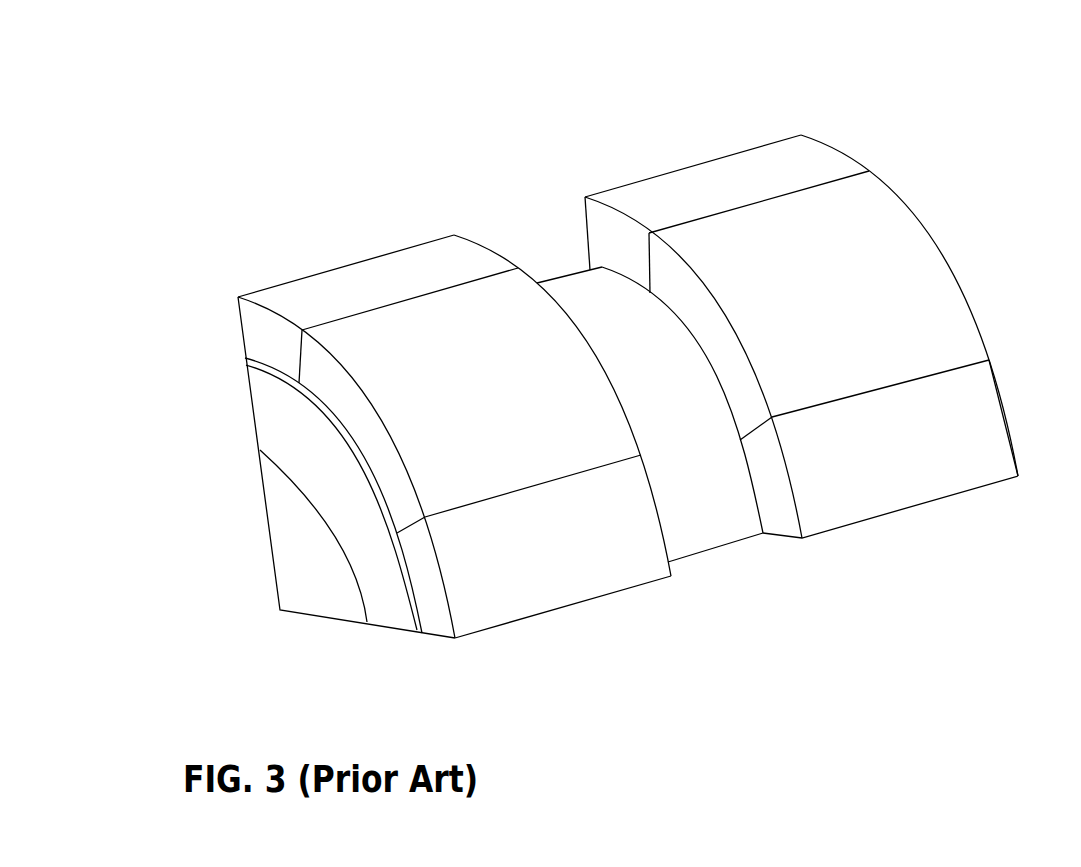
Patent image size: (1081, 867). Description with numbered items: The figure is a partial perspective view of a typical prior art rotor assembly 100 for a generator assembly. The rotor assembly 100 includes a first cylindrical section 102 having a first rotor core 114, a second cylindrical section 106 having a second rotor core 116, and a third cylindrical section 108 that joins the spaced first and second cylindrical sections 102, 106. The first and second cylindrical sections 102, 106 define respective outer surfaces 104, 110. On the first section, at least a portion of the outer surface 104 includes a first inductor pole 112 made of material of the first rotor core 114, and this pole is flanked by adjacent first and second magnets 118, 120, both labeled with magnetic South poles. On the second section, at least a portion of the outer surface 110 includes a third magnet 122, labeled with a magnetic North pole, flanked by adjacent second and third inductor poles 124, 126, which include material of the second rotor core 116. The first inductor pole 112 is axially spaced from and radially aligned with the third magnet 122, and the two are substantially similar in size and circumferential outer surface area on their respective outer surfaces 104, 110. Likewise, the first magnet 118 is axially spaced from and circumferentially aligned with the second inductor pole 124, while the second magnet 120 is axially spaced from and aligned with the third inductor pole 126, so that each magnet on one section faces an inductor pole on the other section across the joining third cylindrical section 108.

The rotor assembly 100 is at (521, 46).
The first cylindrical section 102 is at (360, 237).
The outer surface 104 is at (308, 298).
The second cylindrical section 106 is at (750, 138).
The third cylindrical section 108 is at (552, 245).
The outer surface 110 is at (781, 165).
The first inductor pole 112 is at (422, 400).
The first rotor core 114 is at (270, 555).
The second rotor core 116 is at (1008, 352).
The first magnet 118 is at (460, 253).
The second magnet 120 is at (520, 602).
The third magnet 122 is at (898, 268).
The second inductor pole 124 is at (822, 167).
The third inductor pole 126 is at (977, 415).